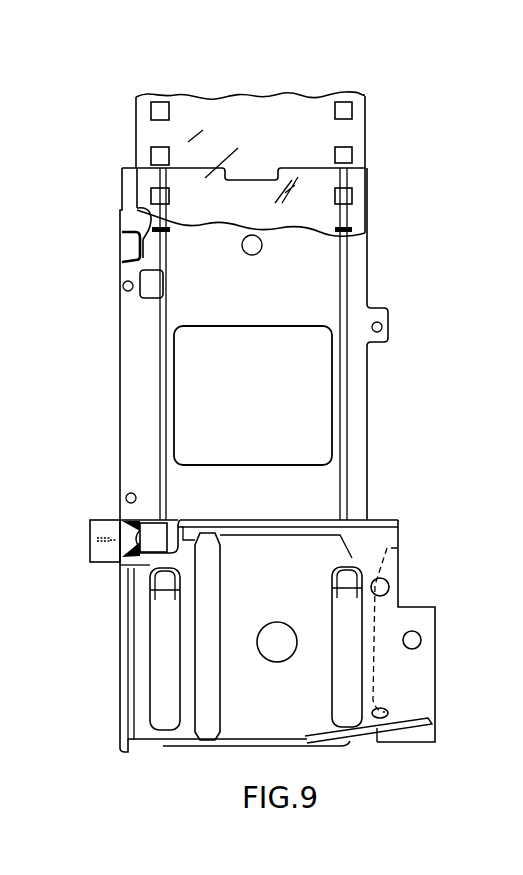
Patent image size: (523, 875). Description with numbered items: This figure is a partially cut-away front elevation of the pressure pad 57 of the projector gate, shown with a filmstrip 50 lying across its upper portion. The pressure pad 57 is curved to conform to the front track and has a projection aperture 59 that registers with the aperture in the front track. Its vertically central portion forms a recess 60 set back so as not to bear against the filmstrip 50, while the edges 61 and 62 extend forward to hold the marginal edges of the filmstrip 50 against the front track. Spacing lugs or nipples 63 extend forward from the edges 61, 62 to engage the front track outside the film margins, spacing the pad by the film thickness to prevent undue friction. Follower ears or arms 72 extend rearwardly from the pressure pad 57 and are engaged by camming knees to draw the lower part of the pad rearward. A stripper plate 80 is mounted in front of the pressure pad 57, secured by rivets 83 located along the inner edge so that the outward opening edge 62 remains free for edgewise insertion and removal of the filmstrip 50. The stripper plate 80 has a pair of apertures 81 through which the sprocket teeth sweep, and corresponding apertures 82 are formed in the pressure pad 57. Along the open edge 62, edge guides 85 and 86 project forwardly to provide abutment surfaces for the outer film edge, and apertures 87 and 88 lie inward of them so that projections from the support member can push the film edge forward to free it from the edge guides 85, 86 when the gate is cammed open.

The filmstrip 50 is at (227, 113).
The pressure pad 57 is at (300, 164).
The projection aperture 59 is at (266, 327).
The recess 60 is at (275, 298).
The edge of pressure pad 61 is at (360, 256).
The edge of pressure pad 62 is at (120, 388).
The spacing lugs or nipples 63 is at (123, 287).
The follower ears or arms 72 is at (90, 536).
The stripper plate 80 is at (288, 586).
The apertures 81 is at (152, 710).
The apertures 82 is at (167, 590).
The rivets 83 is at (416, 631).
The edge guide 85 is at (137, 212).
The edge guide 86 is at (138, 556).
The aperture 87 is at (157, 287).
The aperture 88 is at (158, 527).